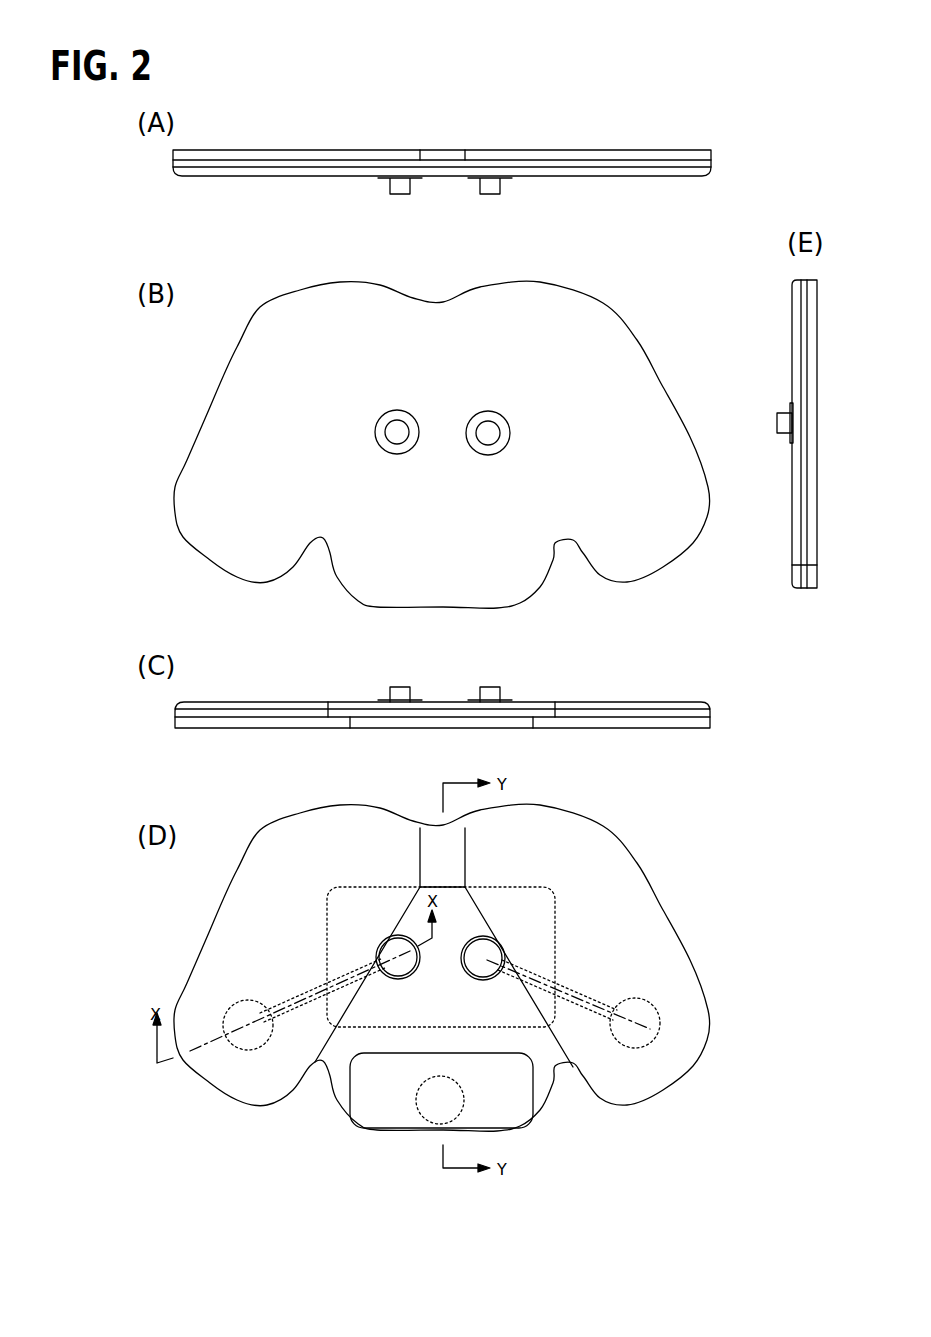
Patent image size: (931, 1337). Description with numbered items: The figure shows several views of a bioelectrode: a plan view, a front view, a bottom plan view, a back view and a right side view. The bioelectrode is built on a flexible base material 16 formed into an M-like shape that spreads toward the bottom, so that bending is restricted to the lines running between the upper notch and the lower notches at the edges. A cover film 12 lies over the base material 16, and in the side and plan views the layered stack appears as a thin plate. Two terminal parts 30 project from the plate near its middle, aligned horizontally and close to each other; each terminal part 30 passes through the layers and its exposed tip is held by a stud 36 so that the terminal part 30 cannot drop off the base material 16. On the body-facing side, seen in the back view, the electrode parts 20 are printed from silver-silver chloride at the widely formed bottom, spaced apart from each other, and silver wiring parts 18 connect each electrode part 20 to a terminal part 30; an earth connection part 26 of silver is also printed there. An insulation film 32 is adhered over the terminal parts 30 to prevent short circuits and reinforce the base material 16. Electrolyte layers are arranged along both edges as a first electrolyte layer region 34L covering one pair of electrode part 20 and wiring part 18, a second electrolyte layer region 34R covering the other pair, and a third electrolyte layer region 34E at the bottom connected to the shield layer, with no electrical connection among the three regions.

The cover film 12 is at (652, 179).
The base material 16 is at (711, 165).
The second electrolyte layer region 34R is at (293, 149).
The first electrolyte layer region 34L is at (597, 150).
The third electrolyte layer region 34E is at (425, 150).
The stud 36 is at (488, 194).
The insulation film 32 is at (387, 1010).
The terminal part 30 is at (508, 948).
The wiring part 18 is at (563, 980).
The electrode part 20 is at (657, 1036).
The earth connection part 26 is at (410, 1103).